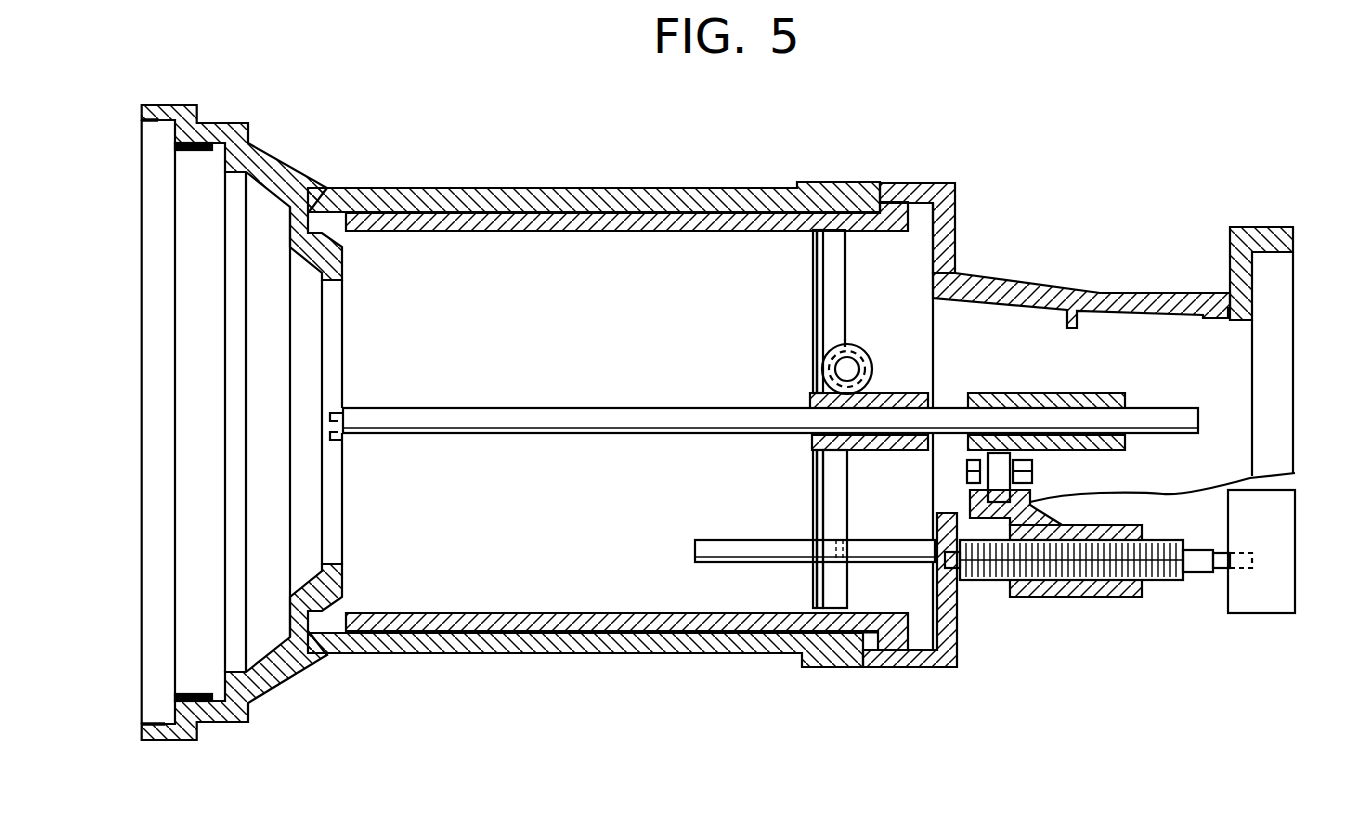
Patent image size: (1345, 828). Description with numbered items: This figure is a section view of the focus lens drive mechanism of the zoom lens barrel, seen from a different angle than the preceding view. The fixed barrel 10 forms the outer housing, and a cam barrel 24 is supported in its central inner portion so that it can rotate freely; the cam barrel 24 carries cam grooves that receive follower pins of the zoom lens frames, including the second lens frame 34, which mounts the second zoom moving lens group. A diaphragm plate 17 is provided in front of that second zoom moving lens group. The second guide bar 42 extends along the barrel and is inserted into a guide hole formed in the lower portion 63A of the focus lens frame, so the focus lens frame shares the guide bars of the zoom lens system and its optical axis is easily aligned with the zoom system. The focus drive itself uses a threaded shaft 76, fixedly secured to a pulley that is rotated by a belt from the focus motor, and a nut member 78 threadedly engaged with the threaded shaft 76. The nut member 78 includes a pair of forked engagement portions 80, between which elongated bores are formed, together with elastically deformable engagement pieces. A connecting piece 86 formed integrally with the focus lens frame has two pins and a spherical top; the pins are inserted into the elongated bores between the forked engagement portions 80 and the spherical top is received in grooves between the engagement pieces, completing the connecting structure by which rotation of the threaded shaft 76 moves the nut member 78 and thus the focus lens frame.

The fixed barrel 10 is at (506, 197).
The cam barrel 24 is at (664, 216).
The diaphragm plate 17 is at (818, 297).
The second lens frame 34 is at (840, 297).
The second guide bar 42 is at (514, 433).
The lower portion of the lens frame 63A is at (1019, 400).
The connecting piece 86 is at (1000, 473).
The forked engagement portions 80 is at (970, 487).
The nut member 78 is at (1073, 597).
The threaded shaft 76 is at (1172, 585).